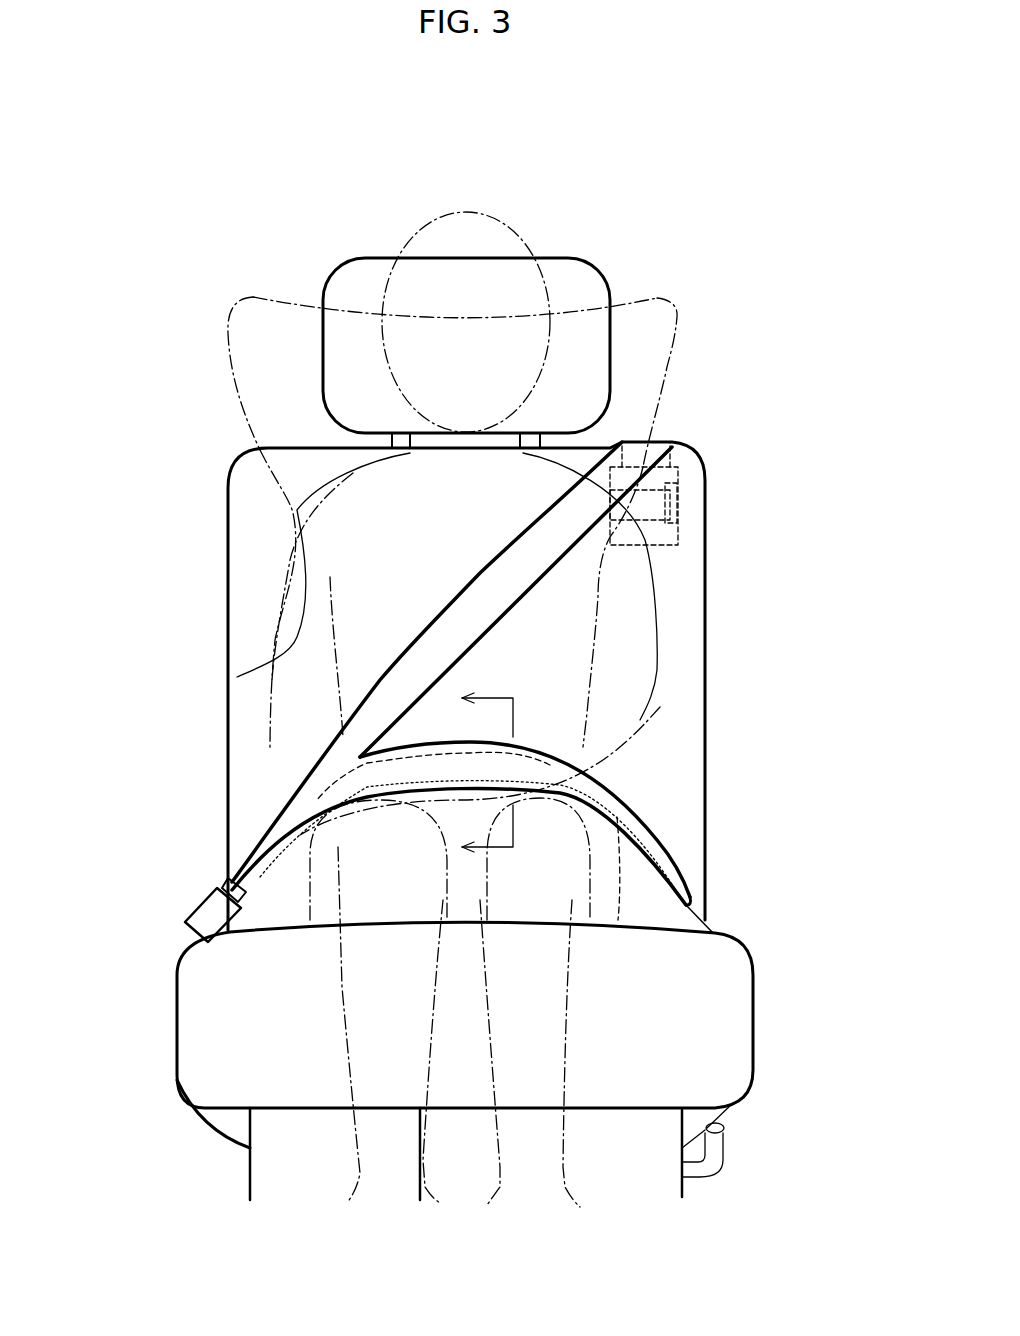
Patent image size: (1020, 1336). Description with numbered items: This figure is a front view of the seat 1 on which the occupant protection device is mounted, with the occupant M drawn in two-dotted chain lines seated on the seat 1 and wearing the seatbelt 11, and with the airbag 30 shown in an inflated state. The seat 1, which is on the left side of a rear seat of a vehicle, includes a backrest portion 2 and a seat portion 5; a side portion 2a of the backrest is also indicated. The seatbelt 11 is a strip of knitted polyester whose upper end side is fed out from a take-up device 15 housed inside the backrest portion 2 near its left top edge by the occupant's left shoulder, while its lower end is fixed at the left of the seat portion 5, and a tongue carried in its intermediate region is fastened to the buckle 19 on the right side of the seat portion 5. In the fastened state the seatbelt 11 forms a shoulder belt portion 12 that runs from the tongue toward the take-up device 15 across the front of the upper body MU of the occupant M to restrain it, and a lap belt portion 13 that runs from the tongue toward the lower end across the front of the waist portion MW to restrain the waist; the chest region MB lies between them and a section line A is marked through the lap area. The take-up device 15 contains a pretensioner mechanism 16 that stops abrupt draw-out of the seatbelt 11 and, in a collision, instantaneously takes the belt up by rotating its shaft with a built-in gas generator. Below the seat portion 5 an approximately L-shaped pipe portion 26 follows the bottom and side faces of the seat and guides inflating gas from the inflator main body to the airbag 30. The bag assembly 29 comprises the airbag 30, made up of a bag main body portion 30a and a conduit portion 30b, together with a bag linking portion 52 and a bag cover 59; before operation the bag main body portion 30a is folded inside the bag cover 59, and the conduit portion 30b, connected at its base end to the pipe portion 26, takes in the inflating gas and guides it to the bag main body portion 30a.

The seat 1 is at (475, 761).
The backrest portion 2 is at (240, 505).
The side portion of seat back 2a is at (627, 592).
The seat portion 5 is at (303, 1080).
The seatbelt 11 is at (110, 625).
The shoulder belt portion 12 is at (433, 657).
The lap belt portion 13 is at (290, 800).
The take-up device 15 is at (690, 468).
The pretensioner mechanism 16 is at (670, 507).
The buckle 19 is at (197, 913).
The pipe portion 26 is at (717, 1153).
The bag assembly 29 is at (642, 800).
The airbag 30 is at (556, 640).
The bag main body portion 30a is at (677, 344).
The conduit portion 30b is at (713, 1130).
The bag linking portion 52 is at (550, 765).
The bag cover 59 is at (660, 845).
The occupant M is at (427, 213).
The upper body MU is at (380, 530).
The chest of occupant MB is at (527, 737).
The waist portion MW is at (660, 707).
The section line A- A is at (482, 779).